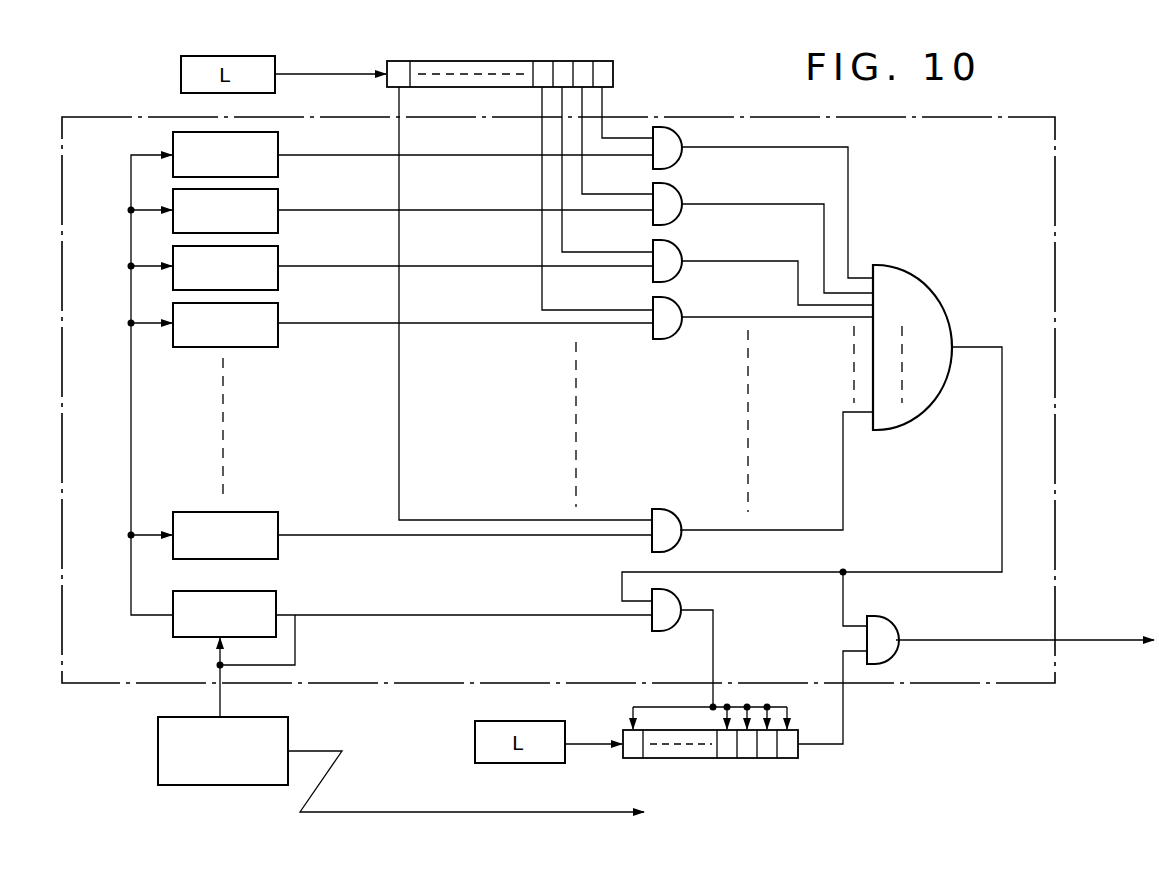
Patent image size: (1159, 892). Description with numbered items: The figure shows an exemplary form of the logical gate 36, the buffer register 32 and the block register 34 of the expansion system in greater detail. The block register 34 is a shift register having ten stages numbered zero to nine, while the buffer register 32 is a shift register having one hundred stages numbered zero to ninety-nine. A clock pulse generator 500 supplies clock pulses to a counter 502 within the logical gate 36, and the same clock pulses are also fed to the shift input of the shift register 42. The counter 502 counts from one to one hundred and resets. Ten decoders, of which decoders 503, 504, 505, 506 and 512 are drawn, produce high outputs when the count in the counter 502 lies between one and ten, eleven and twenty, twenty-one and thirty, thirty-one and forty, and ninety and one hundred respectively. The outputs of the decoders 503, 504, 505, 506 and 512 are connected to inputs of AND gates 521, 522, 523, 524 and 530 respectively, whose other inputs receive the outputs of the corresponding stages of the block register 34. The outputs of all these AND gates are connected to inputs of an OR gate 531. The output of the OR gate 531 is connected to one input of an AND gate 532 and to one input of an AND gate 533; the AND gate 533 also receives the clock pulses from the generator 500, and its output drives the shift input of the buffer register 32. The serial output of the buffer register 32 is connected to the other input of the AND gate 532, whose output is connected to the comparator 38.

The block register 34 is at (490, 62).
The logical gate 36 is at (1057, 333).
The buffer register 32 is at (680, 760).
The comparator 38 is at (1025, 632).
The shift register 42 is at (466, 781).
The clock pulse generator 500 is at (290, 731).
The counter 502 is at (276, 594).
The decoder 503 is at (278, 170).
The decoder 504 is at (278, 226).
The decoder 505 is at (278, 282).
The decoder 506 is at (278, 339).
The decoder 512 is at (278, 551).
The AND gate 521 is at (678, 160).
The AND gate 522 is at (678, 217).
The AND gate 523 is at (678, 273).
The AND gate 524 is at (678, 330).
The AND gate 530 is at (677, 542).
The OR gate 531 is at (930, 396).
The AND gate 532 is at (892, 655).
The AND gate 533 is at (672, 594).